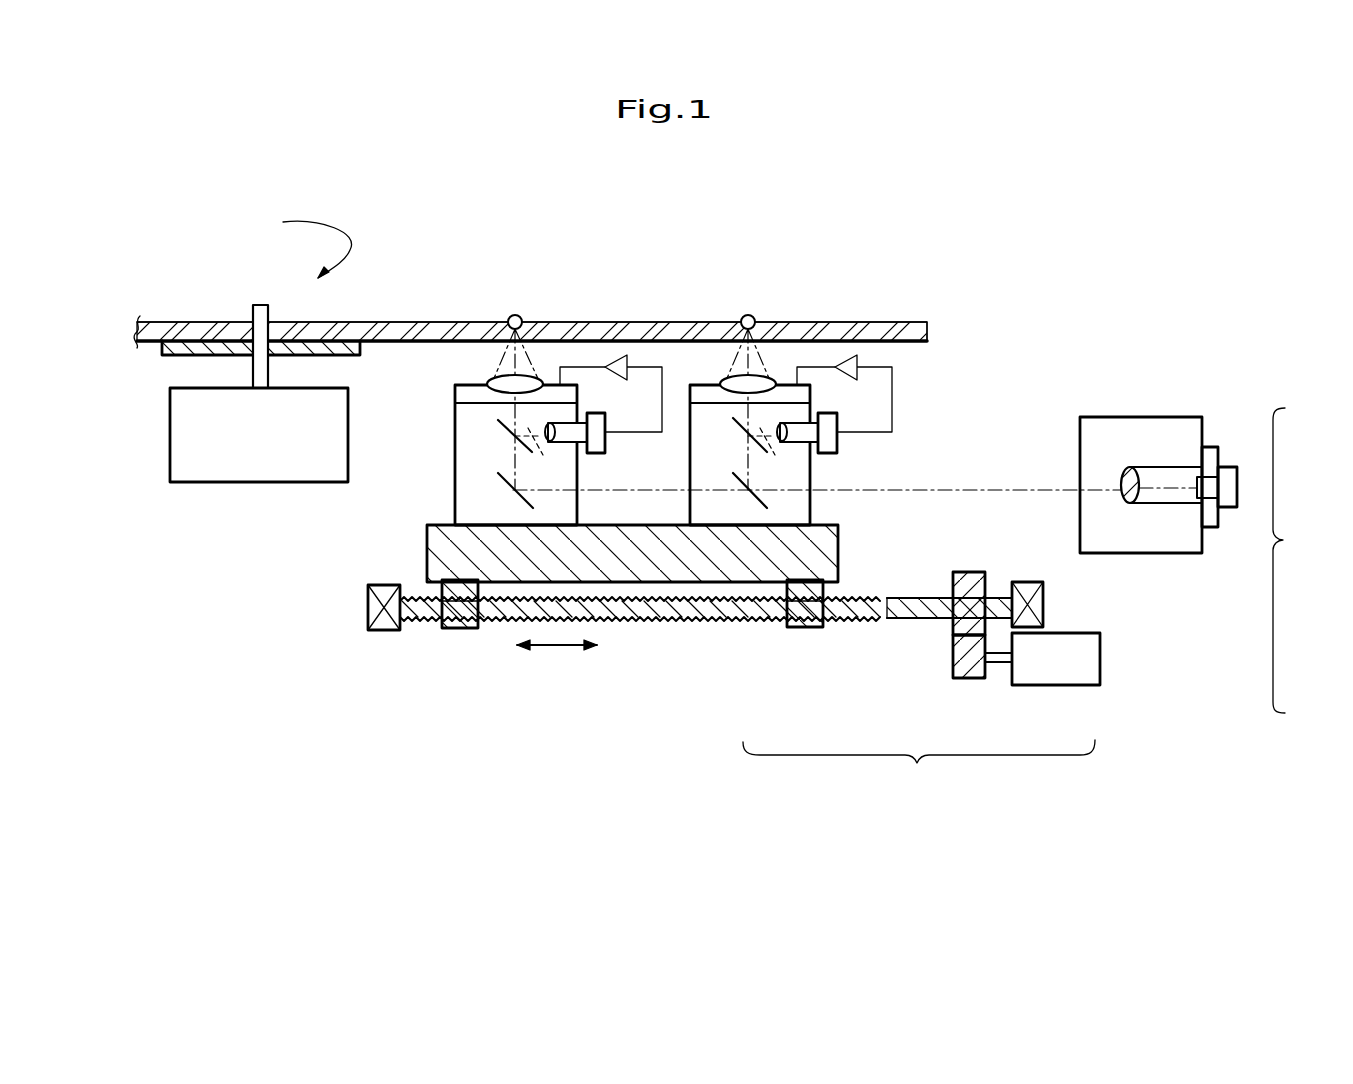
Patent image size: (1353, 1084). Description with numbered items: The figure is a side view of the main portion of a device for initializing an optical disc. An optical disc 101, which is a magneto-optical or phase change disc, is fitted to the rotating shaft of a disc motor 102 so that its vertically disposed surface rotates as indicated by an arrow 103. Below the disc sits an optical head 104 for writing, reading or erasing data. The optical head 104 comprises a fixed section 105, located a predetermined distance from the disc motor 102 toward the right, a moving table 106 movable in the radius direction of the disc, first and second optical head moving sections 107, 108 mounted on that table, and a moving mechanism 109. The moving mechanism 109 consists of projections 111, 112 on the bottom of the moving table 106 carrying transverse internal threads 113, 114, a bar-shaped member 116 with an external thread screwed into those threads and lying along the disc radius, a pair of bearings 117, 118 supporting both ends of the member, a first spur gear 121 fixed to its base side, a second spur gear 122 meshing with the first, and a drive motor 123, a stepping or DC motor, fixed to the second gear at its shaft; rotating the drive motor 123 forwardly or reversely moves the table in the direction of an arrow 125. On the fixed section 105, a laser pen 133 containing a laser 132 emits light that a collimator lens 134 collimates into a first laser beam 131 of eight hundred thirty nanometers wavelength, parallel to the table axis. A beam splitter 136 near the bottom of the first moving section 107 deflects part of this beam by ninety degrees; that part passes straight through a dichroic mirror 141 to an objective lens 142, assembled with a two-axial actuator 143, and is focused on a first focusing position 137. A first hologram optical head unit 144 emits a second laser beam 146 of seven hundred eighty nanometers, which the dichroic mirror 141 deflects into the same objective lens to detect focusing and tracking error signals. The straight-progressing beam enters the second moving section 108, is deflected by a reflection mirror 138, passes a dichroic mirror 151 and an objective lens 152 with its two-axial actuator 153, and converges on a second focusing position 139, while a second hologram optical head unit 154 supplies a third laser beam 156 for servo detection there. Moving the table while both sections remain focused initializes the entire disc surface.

The optical disc 101 is at (640, 320).
The disc motor 102 is at (257, 487).
The arrow 103 is at (317, 222).
The optical head 104 is at (1302, 560).
The fixed section 105 is at (1160, 555).
The moving table 106 is at (655, 572).
The first optical head moving section 107 is at (812, 477).
The second optical head moving section 108 is at (578, 477).
The moving mechanism 109 is at (919, 766).
The projection 111 is at (462, 630).
The projection 112 is at (800, 630).
The internal thread 113 is at (445, 620).
The internal thread 114 is at (785, 620).
The bar-shaped member 116 is at (858, 622).
The bearing 117 is at (366, 608).
The bearing 118 is at (1045, 603).
The first spur gear 121 is at (968, 572).
The second spur gear 122 is at (965, 682).
The drive motor 123 is at (1053, 688).
The arrow 125 is at (557, 652).
The first laser beam 131 is at (958, 486).
The laser 132 is at (1243, 492).
The laser pen 133 is at (1163, 465).
The collimator lens 134 is at (1118, 478).
The beam splitter 136 is at (757, 503).
The first focusing position 137 is at (750, 316).
The reflection mirror 138 is at (521, 503).
The second focusing position 139 is at (517, 316).
The dichroic mirror 141 is at (736, 435).
The objective lens 142 is at (773, 379).
The two-axial actuator 143 is at (702, 390).
The first hologram optical head unit 144 is at (838, 441).
The second laser beam 146 is at (770, 441).
The dichroic mirror 151 is at (505, 433).
The objective lens 152 is at (540, 379).
The two-axial actuator 153 is at (470, 395).
The second hologram optical head unit 154 is at (606, 441).
The third laser beam 156 is at (535, 441).